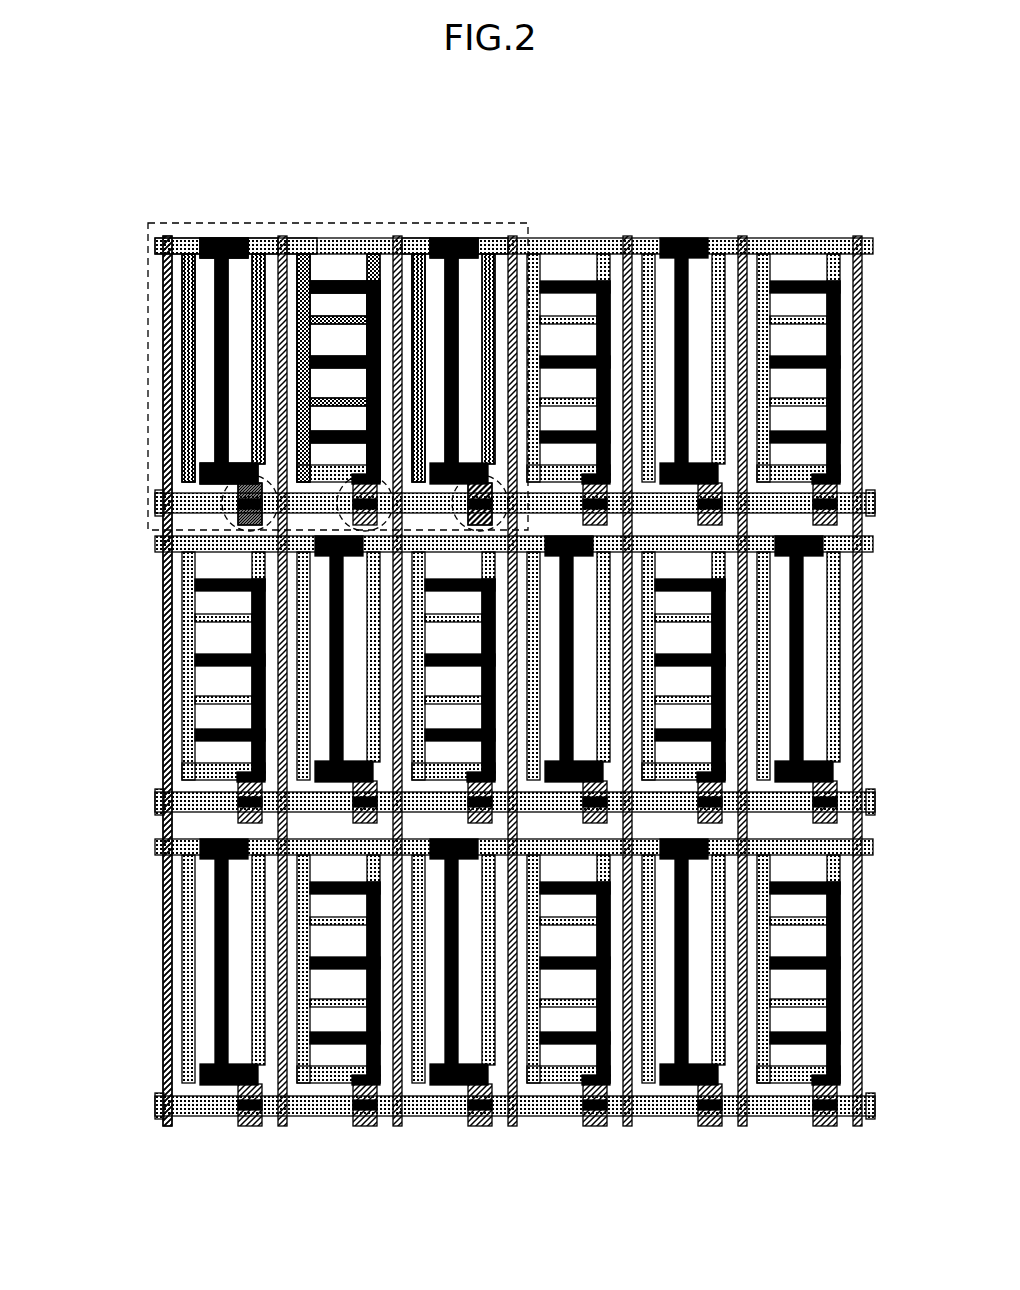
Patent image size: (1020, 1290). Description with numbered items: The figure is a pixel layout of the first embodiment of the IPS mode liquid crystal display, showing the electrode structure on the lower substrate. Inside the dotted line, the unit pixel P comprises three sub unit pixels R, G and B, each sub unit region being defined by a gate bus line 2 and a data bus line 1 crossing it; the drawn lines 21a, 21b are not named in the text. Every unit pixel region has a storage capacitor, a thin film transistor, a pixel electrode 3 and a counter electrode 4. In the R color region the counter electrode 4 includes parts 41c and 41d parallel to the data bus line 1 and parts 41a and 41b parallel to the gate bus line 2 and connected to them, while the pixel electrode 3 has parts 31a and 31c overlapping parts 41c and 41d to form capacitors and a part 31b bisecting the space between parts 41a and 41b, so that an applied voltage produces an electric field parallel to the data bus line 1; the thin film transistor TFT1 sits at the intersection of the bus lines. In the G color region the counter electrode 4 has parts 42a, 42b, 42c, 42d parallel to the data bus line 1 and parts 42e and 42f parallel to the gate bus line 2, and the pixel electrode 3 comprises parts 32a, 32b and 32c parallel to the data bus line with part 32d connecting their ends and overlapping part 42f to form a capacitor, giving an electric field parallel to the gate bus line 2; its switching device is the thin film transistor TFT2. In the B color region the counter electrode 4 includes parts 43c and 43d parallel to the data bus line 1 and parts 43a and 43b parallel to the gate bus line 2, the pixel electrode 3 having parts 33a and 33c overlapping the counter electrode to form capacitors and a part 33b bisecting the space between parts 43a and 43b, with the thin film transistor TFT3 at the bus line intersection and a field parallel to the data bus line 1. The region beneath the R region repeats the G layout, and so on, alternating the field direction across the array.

The data bus line 1 is at (876, 503).
The gate bus line 2 is at (858, 235).
The pixel electrode 3 is at (205, 235).
The counter electrode 4 is at (766, 236).
The unit pixel P is at (176, 222).
The first data line 21a is at (164, 268).
The second data line 21b is at (256, 238).
The part of pixel electrode 31a is at (216, 236).
The part of pixel electrode 31b is at (212, 470).
The part of pixel electrode 31c is at (227, 477).
The part of pixel electrode 32a is at (304, 290).
The part of pixel electrode 32b is at (322, 320).
The part of pixel electrode 32c is at (345, 322).
The part of pixel electrode 32d is at (330, 395).
The part of pixel electrode 33a is at (452, 262).
The part of pixel electrode 33b is at (470, 275).
The part of pixel electrode 33c is at (478, 280).
The part of counter electrode 41a is at (189, 330).
The part of counter electrode 41b is at (259, 400).
The part of counter electrode 41c is at (178, 243).
The part of counter electrode 41d is at (242, 517).
The part of counter electrode 42a is at (294, 238).
The part of counter electrode 42b is at (314, 318).
The part of counter electrode 42c is at (336, 320).
The part of counter electrode 42d is at (360, 268).
The part of counter electrode 42e is at (300, 302).
The part of counter electrode 42f is at (380, 268).
The part of counter electrode 43a is at (428, 278).
The part of counter electrode 43b is at (492, 288).
The part of counter electrode 43c is at (500, 240).
The part of counter electrode 43d is at (478, 485).
The thin film transistor TFT1 is at (238, 522).
The thin film transistor TFT2 is at (352, 522).
The thin film transistor TFT3 is at (466, 522).
The sub unit pixel R is at (214, 368).
The sub unit pixel G is at (312, 368).
The sub unit pixel B is at (428, 368).